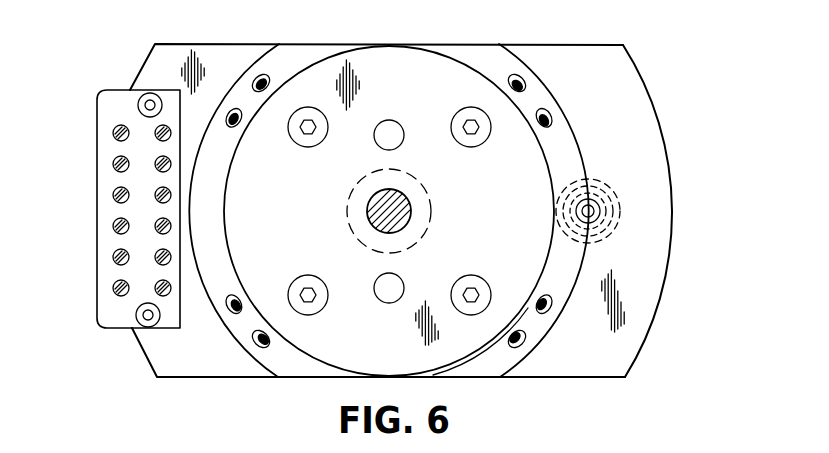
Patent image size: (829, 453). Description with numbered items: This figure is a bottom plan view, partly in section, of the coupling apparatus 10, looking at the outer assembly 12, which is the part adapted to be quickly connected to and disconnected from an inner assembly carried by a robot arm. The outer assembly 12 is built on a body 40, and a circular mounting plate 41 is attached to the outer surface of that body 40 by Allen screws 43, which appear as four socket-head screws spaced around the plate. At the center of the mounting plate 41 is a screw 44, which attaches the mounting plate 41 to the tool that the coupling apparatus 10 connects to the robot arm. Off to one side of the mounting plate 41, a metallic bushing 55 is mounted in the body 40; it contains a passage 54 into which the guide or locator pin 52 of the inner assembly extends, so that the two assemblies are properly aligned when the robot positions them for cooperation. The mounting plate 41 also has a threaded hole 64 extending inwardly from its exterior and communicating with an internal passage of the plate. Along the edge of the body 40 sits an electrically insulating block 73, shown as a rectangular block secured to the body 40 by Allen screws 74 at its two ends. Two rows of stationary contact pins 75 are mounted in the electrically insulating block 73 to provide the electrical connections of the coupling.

The coupling apparatus 10 is at (539, 388).
The outer assembly 12 is at (662, 326).
The body 40 is at (237, 386).
The mounting plate 41 is at (581, 123).
The Allen screws 43 is at (456, 114).
The screw 44 is at (377, 203).
The guide or locator pin 52 is at (607, 200).
The passage 54 is at (598, 220).
The metallic bushing 55 is at (608, 210).
The threaded hole 64 is at (524, 340).
The electrically insulating block 73 is at (92, 137).
The Allen screws 74 is at (140, 103).
The stationary contact pins 75 is at (114, 259).